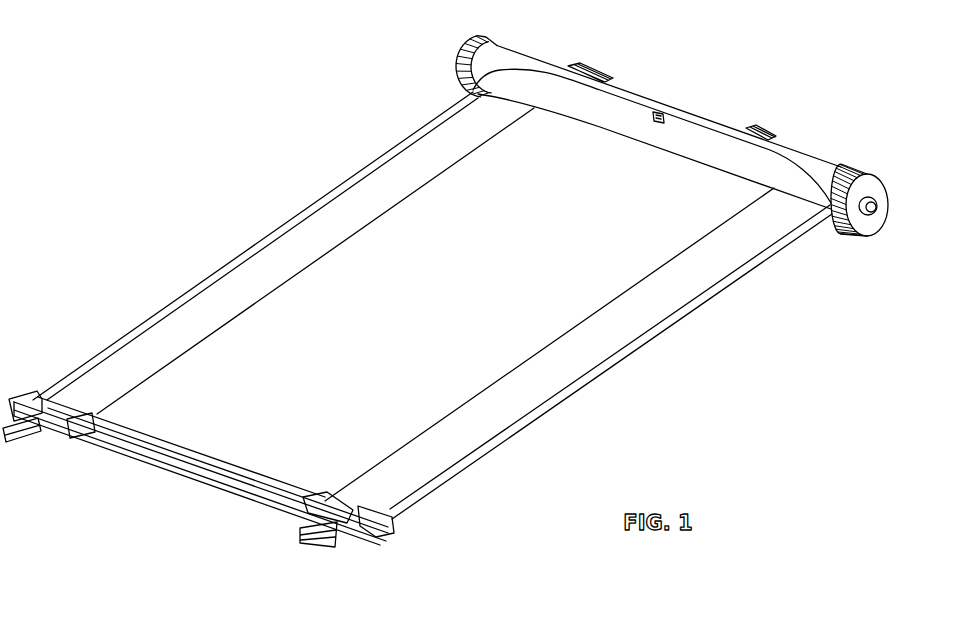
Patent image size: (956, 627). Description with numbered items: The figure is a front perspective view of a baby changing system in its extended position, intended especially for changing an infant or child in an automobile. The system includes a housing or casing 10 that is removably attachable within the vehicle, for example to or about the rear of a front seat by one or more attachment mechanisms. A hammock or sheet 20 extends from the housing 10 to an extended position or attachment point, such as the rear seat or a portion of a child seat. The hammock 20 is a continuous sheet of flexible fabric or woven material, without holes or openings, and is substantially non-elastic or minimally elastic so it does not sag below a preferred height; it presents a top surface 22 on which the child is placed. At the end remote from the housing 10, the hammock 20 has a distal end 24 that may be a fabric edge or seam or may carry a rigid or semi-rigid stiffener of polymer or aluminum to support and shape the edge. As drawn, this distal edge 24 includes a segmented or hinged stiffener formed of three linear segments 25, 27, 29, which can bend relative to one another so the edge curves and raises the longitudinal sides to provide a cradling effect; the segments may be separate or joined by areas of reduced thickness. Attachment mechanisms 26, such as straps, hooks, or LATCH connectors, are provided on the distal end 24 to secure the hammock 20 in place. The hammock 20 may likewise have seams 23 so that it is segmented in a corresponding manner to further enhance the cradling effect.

The housing 10 is at (512, 52).
The hammock 20 is at (632, 340).
The top surface 22 is at (435, 304).
The seams 23 is at (397, 233).
The distal end 24 is at (202, 477).
The linear segment 25 is at (27, 402).
The attachment mechanisms 26 is at (37, 440).
The linear segment 27 is at (200, 457).
The linear segment 29 is at (370, 518).